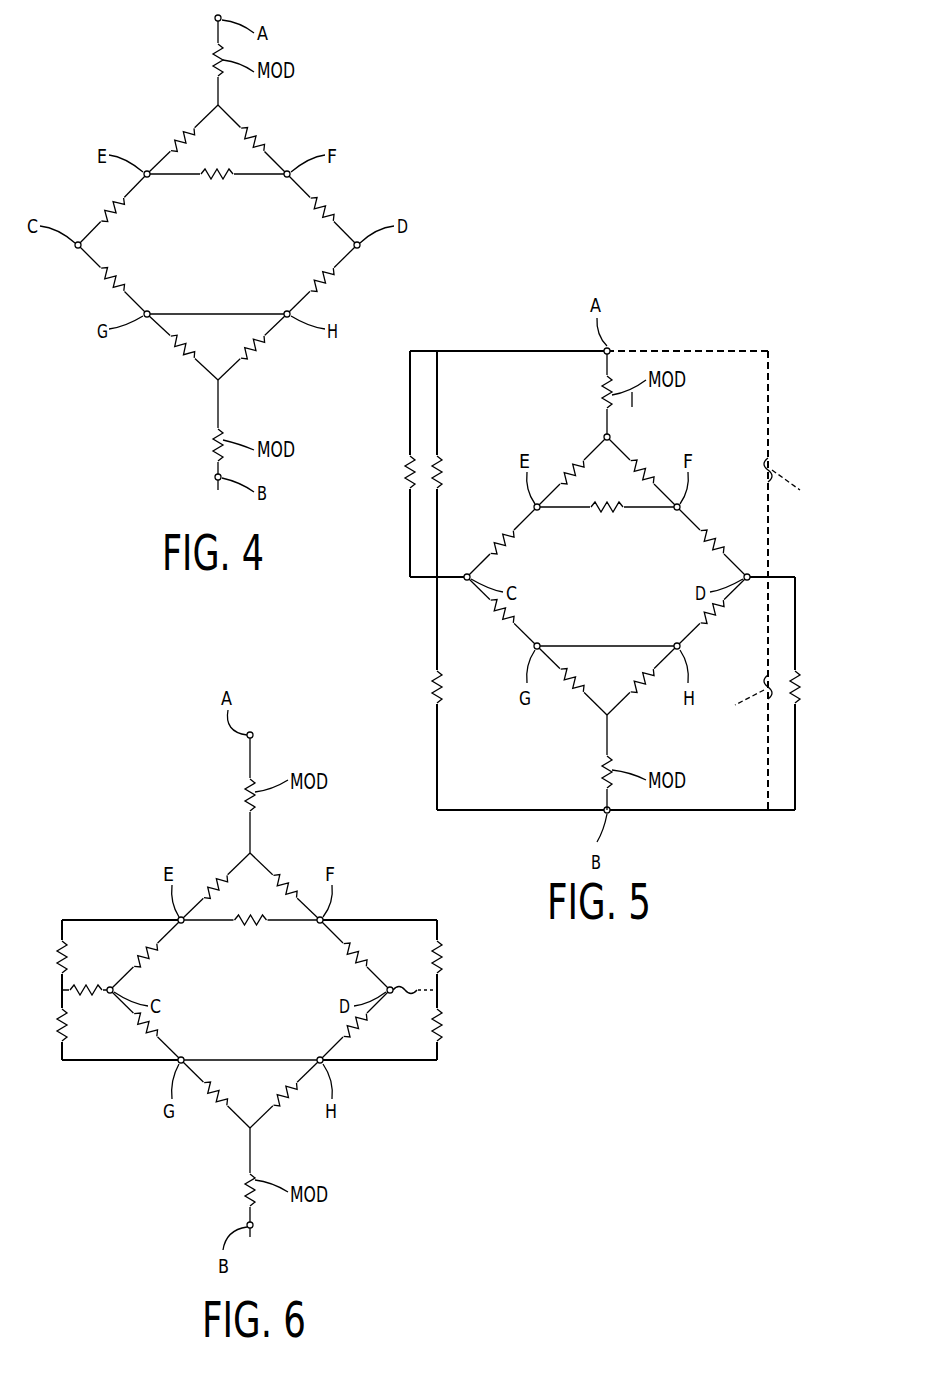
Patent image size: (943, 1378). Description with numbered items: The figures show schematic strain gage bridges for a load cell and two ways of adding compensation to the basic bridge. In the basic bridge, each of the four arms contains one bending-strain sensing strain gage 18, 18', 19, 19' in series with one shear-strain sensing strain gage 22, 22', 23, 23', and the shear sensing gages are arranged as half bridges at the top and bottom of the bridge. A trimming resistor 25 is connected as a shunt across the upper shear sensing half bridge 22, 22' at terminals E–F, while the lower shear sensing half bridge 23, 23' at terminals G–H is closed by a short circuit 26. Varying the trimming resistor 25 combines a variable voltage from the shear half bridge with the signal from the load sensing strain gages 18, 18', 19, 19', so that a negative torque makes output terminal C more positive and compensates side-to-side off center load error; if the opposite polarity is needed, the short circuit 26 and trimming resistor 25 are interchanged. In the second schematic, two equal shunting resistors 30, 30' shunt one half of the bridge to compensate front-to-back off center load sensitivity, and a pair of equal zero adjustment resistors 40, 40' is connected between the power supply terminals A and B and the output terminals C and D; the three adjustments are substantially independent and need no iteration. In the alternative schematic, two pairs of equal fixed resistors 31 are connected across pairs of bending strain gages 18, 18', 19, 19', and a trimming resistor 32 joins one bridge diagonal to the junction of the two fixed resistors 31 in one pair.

In FIG. 4, the strain gage 18 is at (91, 209).
In FIG. 5, the strain gage 18 is at (502, 528).
In FIG. 6, the strain gage 18 is at (144, 939).
In FIG. 4, the strain gage 18' is at (343, 209).
In FIG. 5, the strain gage 18' is at (712, 528).
In FIG. 6, the strain gage 18' is at (356, 939).
In FIG. 4, the strain gage 19 is at (93, 279).
In FIG. 5, the strain gage 19 is at (500, 624).
In FIG. 6, the strain gage 19 is at (143, 1044).
In FIG. 4, the strain gage 19' is at (344, 279).
In FIG. 5, the strain gage 19' is at (713, 624).
In FIG. 6, the strain gage 19' is at (357, 1044).
In FIG. 4, the strain gage 22 is at (162, 139).
In FIG. 5, the strain gage 22 is at (572, 459).
In FIG. 6, the strain gage 22 is at (215, 873).
In FIG. 4, the strain gage 22' is at (275, 139).
In FIG. 5, the strain gage 22' is at (646, 459).
In FIG. 6, the strain gage 22' is at (285, 873).
In FIG. 4, the strain gage 23 is at (164, 347).
In FIG. 5, the strain gage 23 is at (572, 696).
In FIG. 6, the strain gage 23 is at (215, 1111).
In FIG. 4, the strain gage 23' is at (275, 347).
In FIG. 5, the strain gage 23' is at (643, 696).
In FIG. 6, the strain gage 23' is at (286, 1111).
In FIG. 4, the trimming resistor 25 is at (217, 180).
In FIG. 5, the trimming resistor 25 is at (607, 512).
In FIG. 6, the trimming resistor 25 is at (250, 926).
In FIG. 4, the short circuit 26 is at (217, 310).
In FIG. 5, the short circuit 26 is at (609, 642).
In FIG. 6, the short circuit 26 is at (252, 1057).
In FIG. 5, the shunting resistor 30 is at (635, 580).
In FIG. 5, the shunting resistor 30' is at (465, 690).
In FIG. 5, the zero adjustment resistor 40 is at (384, 466).
In FIG. 5, the zero adjustment resistor 40' is at (822, 690).
In FIG. 6, the fixed resistor 31 is at (58, 958).
In FIG. 6, the trimming resistor 32 is at (92, 984).